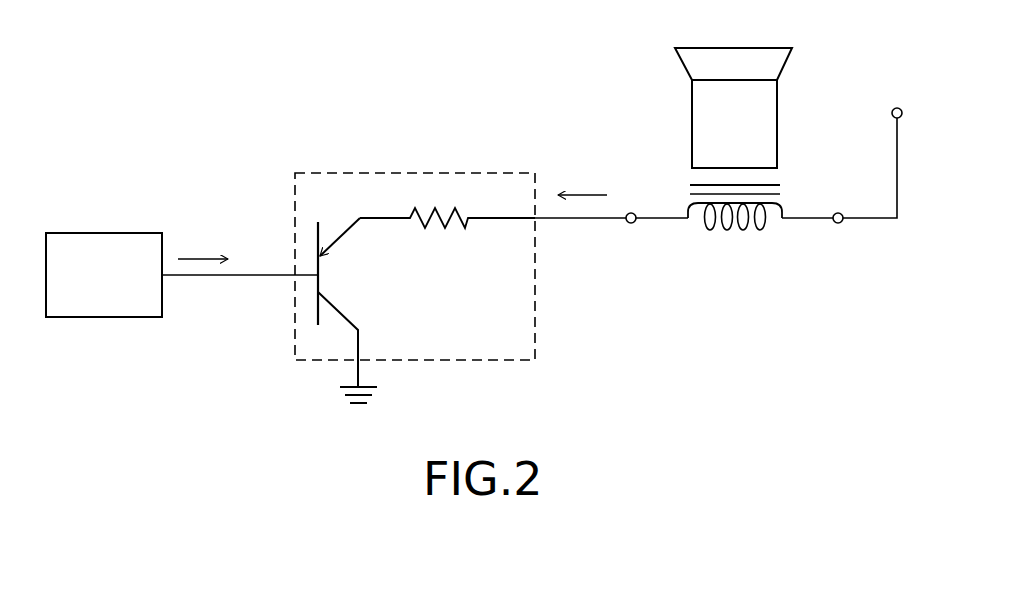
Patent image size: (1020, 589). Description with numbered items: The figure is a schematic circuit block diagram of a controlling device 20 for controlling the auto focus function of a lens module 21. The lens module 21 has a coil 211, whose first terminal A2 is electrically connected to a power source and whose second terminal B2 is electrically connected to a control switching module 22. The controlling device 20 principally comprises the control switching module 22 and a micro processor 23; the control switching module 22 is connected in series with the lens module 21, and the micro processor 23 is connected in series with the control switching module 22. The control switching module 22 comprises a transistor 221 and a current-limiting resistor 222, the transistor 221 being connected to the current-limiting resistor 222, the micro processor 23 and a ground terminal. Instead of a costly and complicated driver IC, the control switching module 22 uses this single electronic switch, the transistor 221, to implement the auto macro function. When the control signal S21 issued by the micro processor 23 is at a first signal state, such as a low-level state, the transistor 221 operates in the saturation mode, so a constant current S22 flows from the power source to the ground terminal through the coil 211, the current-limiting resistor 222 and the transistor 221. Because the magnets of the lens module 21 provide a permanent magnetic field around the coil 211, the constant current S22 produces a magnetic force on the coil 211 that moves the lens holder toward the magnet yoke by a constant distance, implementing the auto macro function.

The controlling device 20 is at (278, 40).
The lens module 21 is at (755, 130).
The coil 211 is at (745, 232).
The control switching module 22 is at (400, 171).
The transistor 221 is at (334, 283).
The current-limiting resistor 222 is at (465, 234).
The micro processor 23 is at (120, 243).
The control signal S21 is at (197, 256).
The constant current S22 is at (583, 193).
The first terminal A2 is at (843, 222).
The second terminal B2 is at (636, 222).